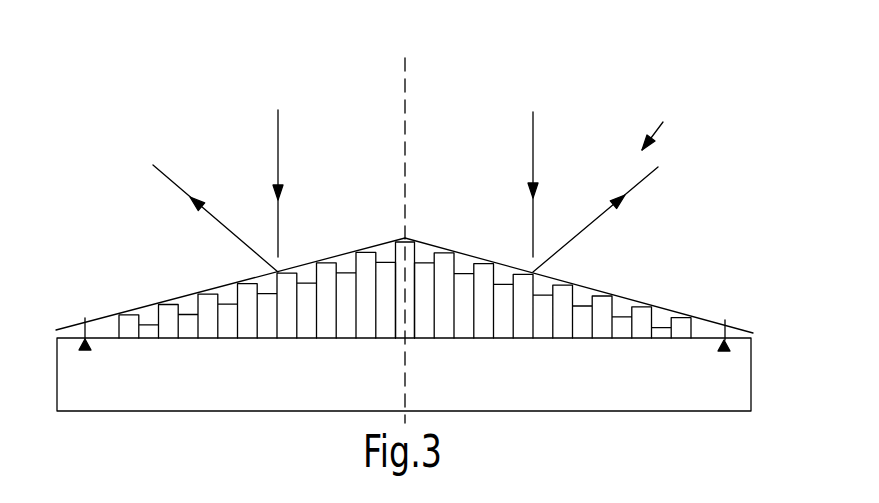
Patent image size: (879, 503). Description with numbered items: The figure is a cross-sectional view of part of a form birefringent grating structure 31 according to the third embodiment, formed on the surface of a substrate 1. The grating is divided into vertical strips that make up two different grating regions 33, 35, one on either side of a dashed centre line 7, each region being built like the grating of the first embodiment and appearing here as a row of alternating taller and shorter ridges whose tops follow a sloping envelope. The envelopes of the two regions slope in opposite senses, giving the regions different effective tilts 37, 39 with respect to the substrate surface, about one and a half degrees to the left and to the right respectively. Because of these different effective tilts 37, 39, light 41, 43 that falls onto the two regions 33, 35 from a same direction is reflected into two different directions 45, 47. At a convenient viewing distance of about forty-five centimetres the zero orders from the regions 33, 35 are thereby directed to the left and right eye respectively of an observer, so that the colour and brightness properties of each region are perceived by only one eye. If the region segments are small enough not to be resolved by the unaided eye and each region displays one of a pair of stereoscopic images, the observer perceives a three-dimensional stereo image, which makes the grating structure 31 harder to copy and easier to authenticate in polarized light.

The substrate 1 is at (740, 372).
The optical axis / centre line 7 is at (405, 99).
The form birefringent grating structure 31 is at (657, 122).
The first grating region 33 is at (403, 347).
The second grating region 35 is at (692, 348).
The left effective tilt 37 is at (85, 318).
The right effective tilt 39 is at (725, 320).
The incident light on first region 41 is at (279, 148).
The incident light on second region 43 is at (533, 152).
The first reflected direction 45 is at (181, 193).
The second reflected direction 47 is at (632, 190).